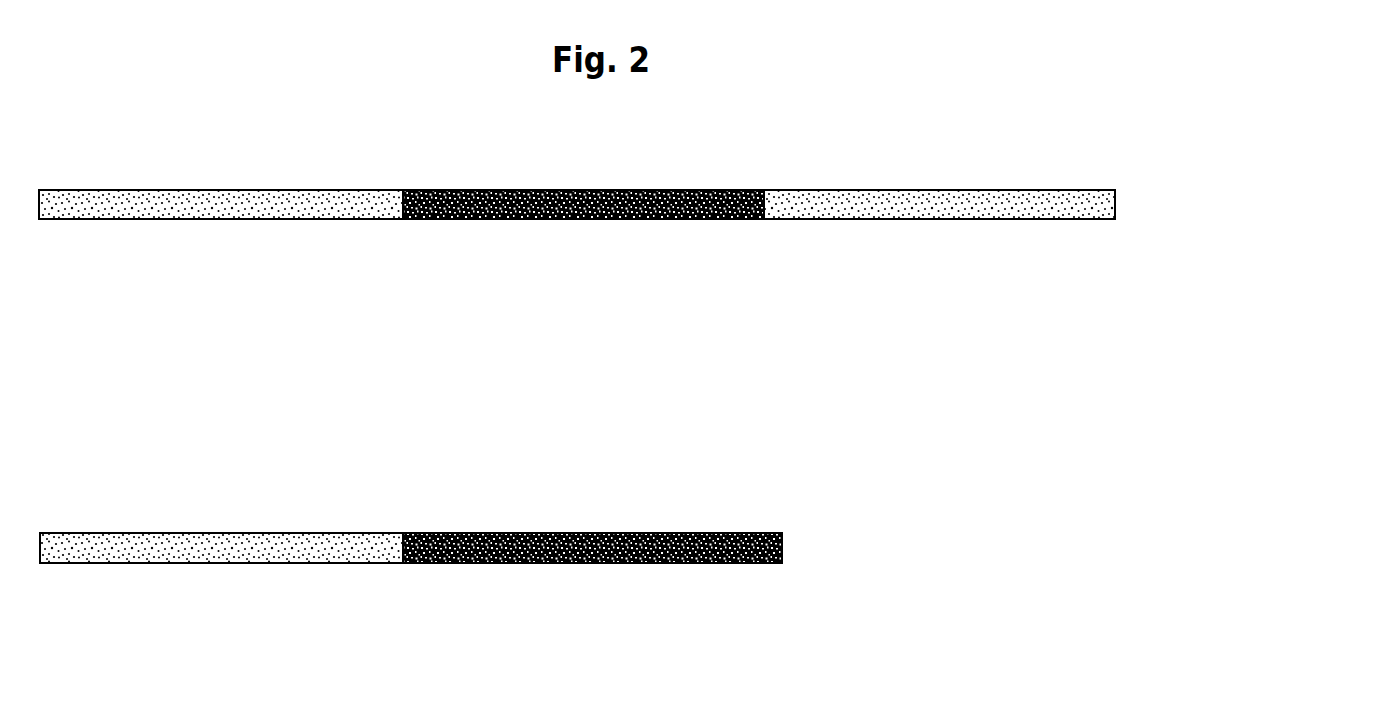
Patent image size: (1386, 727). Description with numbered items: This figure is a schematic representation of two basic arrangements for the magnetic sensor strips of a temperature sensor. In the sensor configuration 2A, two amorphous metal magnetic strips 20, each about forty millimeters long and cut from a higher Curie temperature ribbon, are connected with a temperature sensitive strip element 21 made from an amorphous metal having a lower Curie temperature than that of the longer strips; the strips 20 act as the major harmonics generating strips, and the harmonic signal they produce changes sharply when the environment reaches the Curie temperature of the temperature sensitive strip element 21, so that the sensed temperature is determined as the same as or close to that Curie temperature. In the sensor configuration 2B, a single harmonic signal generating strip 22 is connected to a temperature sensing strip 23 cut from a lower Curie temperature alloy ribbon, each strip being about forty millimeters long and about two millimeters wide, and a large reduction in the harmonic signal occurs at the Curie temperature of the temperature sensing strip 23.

The sensor configuration 2A is at (1128, 189).
The sensor configuration 2B is at (793, 547).
The amorphous metal magnetic strips 20 is at (243, 220).
The temperature sensitive strip element 21 is at (591, 220).
The harmonic signal generating strip 22 is at (243, 564).
The temperature sensing strip 23 is at (622, 564).